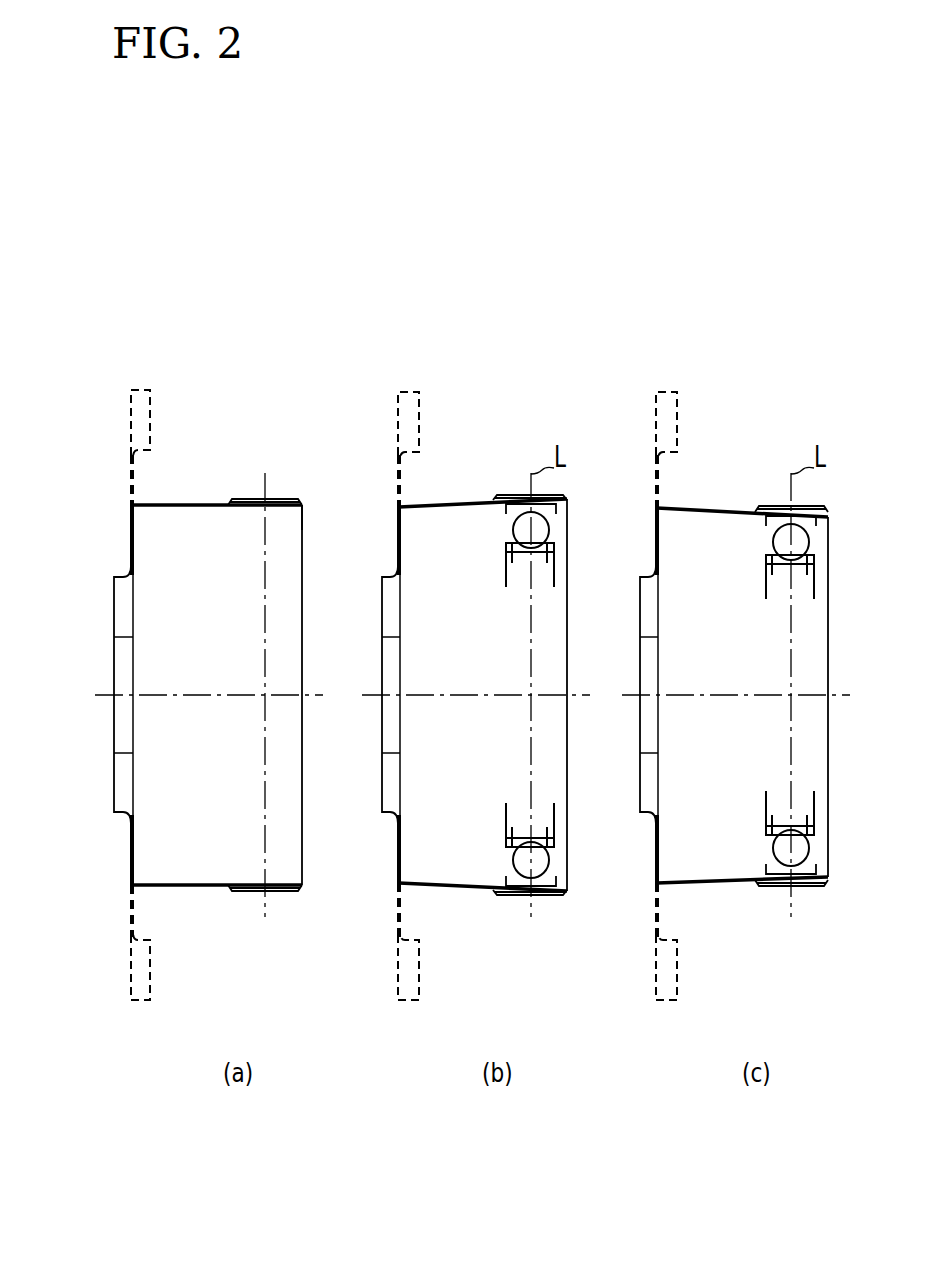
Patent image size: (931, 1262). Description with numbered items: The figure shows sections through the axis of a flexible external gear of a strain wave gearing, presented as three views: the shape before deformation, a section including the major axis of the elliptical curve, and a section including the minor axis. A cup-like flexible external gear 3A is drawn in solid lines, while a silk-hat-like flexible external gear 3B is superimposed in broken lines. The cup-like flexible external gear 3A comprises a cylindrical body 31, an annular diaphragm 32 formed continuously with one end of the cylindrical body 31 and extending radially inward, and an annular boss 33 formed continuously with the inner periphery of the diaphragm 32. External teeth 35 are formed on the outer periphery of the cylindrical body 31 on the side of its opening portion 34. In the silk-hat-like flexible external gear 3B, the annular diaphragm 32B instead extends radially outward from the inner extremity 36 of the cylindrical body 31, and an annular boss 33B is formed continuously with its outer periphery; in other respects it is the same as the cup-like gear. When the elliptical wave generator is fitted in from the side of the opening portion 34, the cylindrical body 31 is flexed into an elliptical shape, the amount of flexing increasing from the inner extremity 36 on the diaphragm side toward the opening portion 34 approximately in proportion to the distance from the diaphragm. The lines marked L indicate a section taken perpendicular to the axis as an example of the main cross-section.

The cup-like flexible external gear 3A is at (100, 543).
The silk-hat-like flexible external gear 3B is at (103, 434).
The cylindrical body 31 is at (212, 510).
The annular diaphragm 32 is at (135, 548).
The annular diaphragm 32B is at (130, 473).
The annular boss 33 is at (125, 630).
The annular boss 33B is at (128, 408).
The opening portion 34 is at (303, 504).
The external teeth 35 is at (283, 494).
The inner extremity 36 is at (135, 510).
The section line L is at (265, 474).